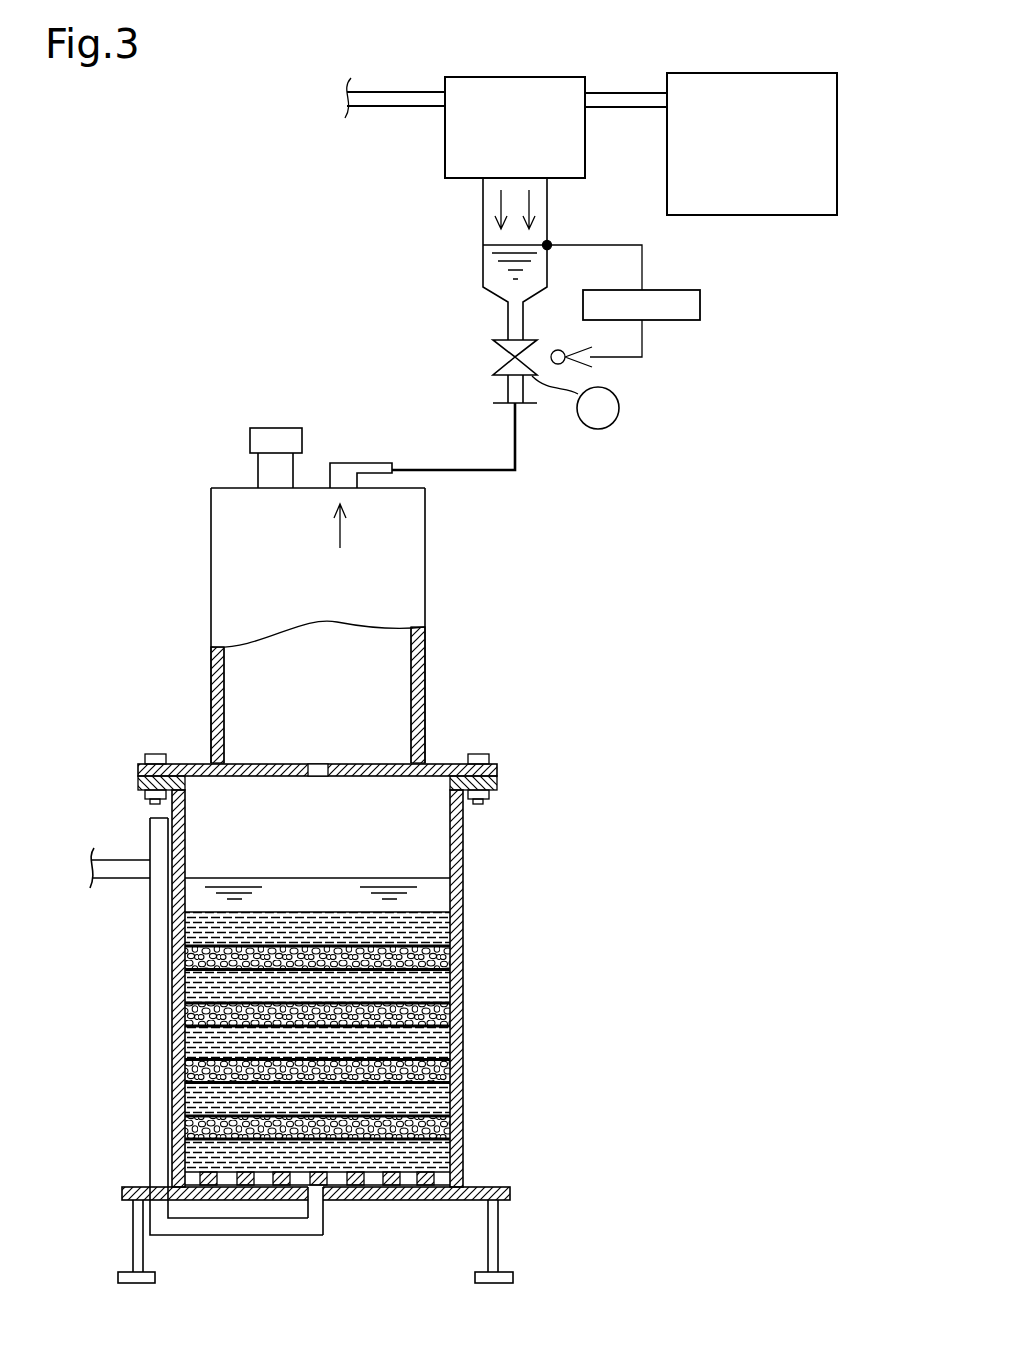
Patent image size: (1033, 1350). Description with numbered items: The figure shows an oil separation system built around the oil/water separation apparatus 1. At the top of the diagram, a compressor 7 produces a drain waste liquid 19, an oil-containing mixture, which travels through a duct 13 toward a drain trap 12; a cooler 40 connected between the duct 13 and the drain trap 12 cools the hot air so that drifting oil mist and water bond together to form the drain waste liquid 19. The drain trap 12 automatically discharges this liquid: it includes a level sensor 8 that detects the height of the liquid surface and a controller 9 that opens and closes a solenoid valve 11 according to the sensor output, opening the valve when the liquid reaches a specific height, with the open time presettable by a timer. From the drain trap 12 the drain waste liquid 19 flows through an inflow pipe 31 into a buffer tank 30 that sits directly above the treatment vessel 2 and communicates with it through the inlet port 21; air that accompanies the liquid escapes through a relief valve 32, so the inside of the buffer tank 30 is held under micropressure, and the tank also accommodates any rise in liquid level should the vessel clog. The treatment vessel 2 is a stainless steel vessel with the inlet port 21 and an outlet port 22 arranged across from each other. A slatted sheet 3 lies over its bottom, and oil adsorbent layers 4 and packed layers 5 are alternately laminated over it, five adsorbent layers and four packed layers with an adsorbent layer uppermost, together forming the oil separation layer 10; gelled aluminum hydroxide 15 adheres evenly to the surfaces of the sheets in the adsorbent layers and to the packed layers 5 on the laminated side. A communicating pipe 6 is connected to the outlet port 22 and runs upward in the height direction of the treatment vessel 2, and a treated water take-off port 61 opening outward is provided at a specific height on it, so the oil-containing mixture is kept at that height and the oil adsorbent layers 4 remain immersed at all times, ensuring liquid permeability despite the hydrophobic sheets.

The oil/water separation apparatus 1 is at (504, 830).
The treatment vessel 2 is at (456, 1091).
The slatted sheet 3 is at (430, 1179).
The oil adsorbent layer 4 is at (182, 982).
The packed layer 5 is at (182, 957).
The communicating pipe 6 is at (215, 1228).
The compressor 7 is at (838, 131).
The level sensor 8 is at (550, 243).
The controller 9 is at (700, 305).
The oil separation layer 10 is at (307, 1045).
The solenoid valve 11 is at (501, 354).
The drain trap 12 is at (484, 267).
The duct 13 is at (624, 100).
The gelled aluminum hydroxide 15 is at (420, 909).
The drain waste liquid 19 is at (503, 205).
The inlet port 21 is at (318, 771).
The outlet port 22 is at (313, 1216).
The buffer tank 30 is at (426, 658).
The inflow pipe 31 is at (371, 466).
The relief valve 32 is at (259, 442).
The cooler 40 is at (511, 77).
The treated water take-off port 61 is at (113, 861).